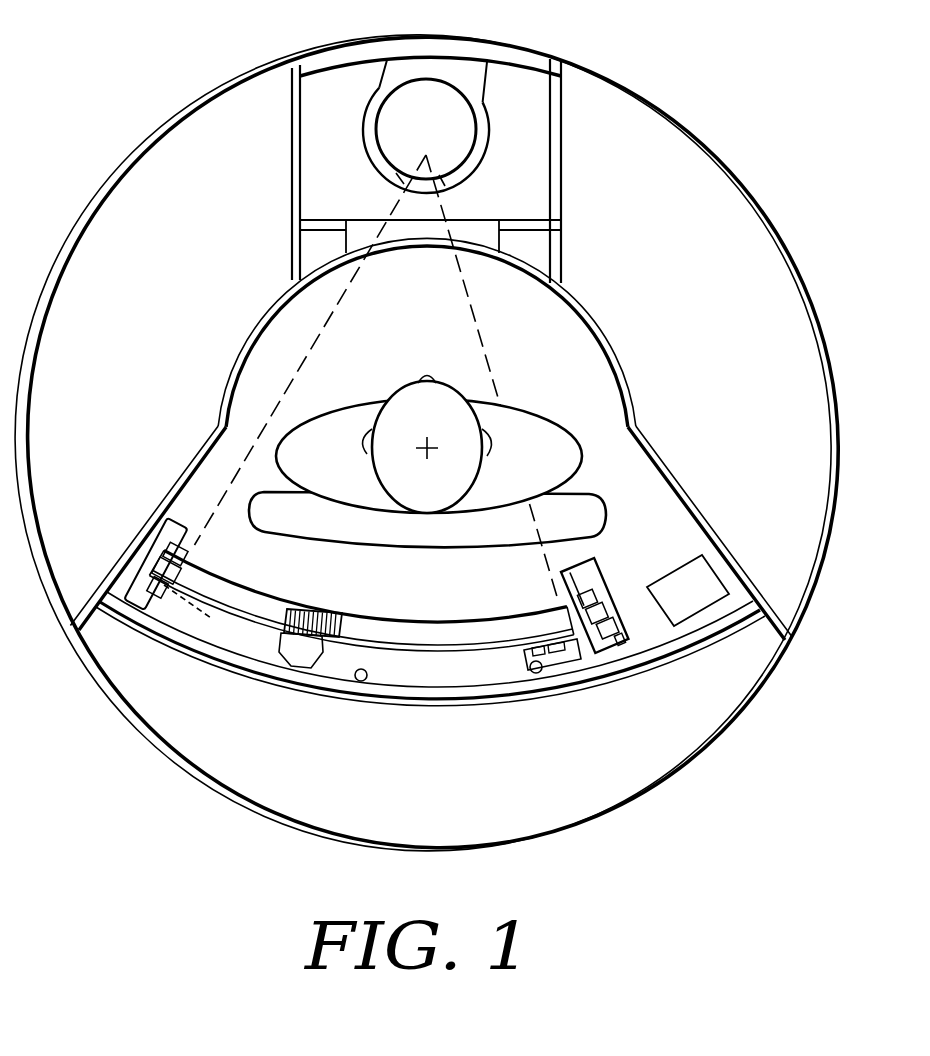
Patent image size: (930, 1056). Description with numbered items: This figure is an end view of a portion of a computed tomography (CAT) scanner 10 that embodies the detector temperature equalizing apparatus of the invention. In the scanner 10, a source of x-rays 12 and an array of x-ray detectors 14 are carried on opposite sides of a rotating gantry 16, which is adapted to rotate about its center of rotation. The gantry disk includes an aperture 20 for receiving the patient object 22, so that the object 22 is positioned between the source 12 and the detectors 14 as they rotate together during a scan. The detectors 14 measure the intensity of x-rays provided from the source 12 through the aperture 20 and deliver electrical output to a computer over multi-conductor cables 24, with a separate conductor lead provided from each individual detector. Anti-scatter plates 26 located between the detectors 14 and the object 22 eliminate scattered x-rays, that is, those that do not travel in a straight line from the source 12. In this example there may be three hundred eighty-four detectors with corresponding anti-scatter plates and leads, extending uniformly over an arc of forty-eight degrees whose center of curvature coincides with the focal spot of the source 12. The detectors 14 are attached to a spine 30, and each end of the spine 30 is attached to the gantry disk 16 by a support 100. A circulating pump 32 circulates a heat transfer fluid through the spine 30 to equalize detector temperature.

The computed tomography (CAT) scanner 10 is at (676, 866).
The source of x-rays 12 is at (487, 161).
The array of x-ray detectors 14 is at (268, 673).
The rotating gantry 16 is at (816, 344).
The aperture 20 is at (482, 333).
The patient object 22 is at (504, 402).
The multi-conductor cables 24 is at (560, 650).
The anti-scatter plates 26 is at (313, 613).
The spine 30 is at (297, 648).
The circulating pump 32 is at (700, 607).
The support 100 is at (167, 528).